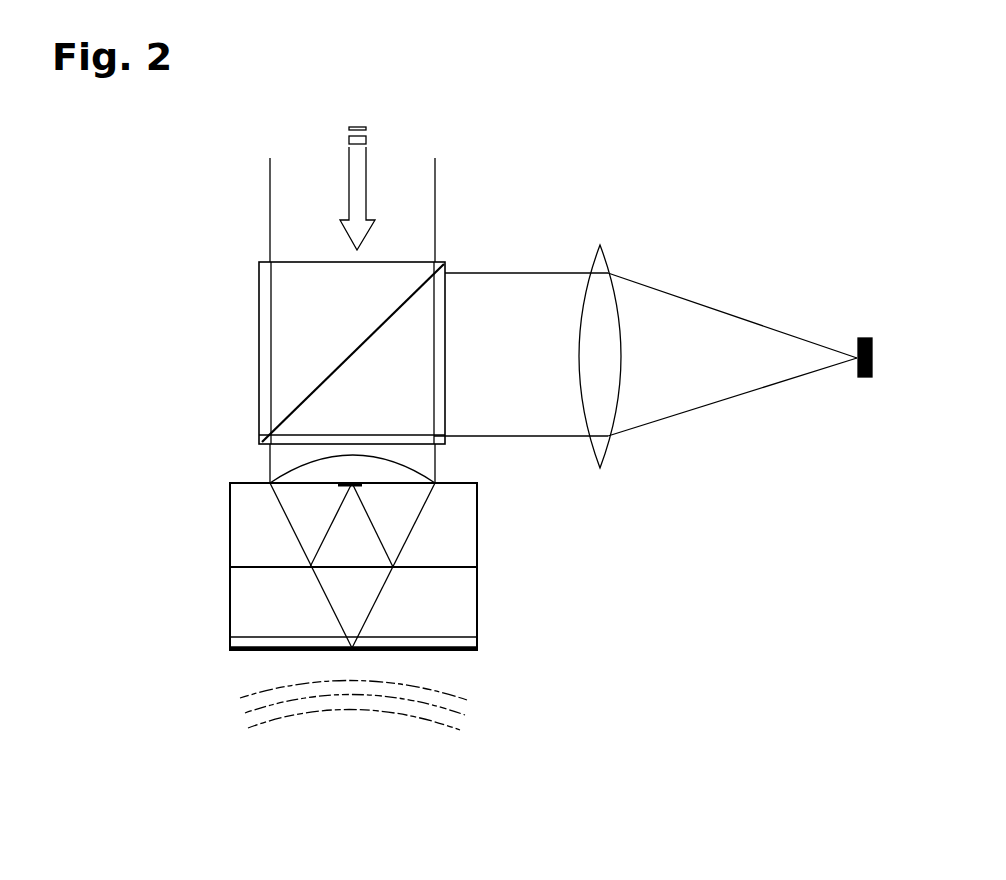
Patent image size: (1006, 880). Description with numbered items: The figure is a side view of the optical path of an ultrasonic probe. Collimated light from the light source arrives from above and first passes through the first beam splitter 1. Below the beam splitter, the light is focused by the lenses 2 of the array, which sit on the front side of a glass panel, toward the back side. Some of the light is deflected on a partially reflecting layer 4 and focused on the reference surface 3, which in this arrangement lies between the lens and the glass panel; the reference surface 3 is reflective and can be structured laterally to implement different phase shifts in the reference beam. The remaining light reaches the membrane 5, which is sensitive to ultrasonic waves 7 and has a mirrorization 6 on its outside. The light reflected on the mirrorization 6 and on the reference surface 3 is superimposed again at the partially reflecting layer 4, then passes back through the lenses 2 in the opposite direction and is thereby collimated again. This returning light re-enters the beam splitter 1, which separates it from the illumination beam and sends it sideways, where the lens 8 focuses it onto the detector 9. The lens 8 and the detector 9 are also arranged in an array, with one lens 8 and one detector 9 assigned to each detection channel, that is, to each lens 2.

The first beam splitter 1 is at (250, 350).
The lenses of the array 2 is at (280, 472).
The reference surface 3 is at (350, 484).
The partially reflecting layer 4 is at (462, 569).
The membrane 5 is at (267, 635).
The mirrorization 6 is at (285, 655).
The ultrasonic waves 7 is at (323, 722).
The lens 8 is at (612, 262).
The detector 9 is at (882, 347).